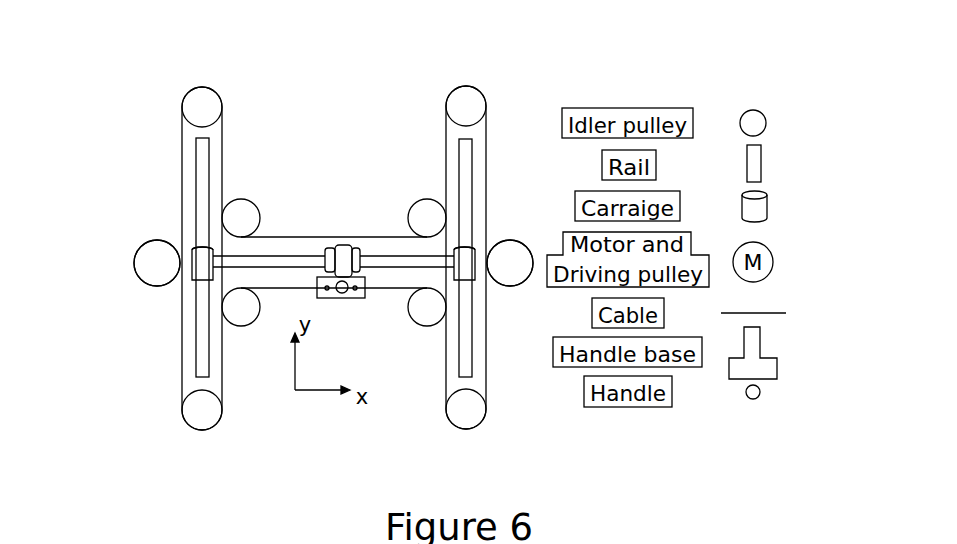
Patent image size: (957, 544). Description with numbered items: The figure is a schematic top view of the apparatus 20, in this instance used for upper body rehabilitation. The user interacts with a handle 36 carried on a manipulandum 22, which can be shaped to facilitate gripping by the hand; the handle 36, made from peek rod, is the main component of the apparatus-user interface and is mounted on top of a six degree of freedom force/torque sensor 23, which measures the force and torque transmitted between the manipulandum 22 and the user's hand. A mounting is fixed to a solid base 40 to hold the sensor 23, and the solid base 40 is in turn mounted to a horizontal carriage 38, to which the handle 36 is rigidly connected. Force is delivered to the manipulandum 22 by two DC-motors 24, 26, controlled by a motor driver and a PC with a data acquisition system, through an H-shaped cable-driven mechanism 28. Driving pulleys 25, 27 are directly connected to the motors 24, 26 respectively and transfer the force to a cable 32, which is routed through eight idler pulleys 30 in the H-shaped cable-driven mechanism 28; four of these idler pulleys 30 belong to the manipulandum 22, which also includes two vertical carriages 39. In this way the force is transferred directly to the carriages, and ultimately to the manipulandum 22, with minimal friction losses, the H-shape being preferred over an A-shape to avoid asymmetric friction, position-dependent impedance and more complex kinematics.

The apparatus 20 is at (115, 293).
The manipulandum 22 is at (333, 299).
The six degree of freedom force/torque sensor 23 is at (343, 245).
The DC-motor 24 is at (157, 263).
The driving pulley 25 is at (165, 241).
The DC-motor 26 is at (510, 263).
The driving pulley 27 is at (510, 240).
The H-shaped cable-driven mechanism 28 is at (466, 140).
The idler pulley 30 is at (202, 86).
The cable 32 is at (486, 386).
The handle 36 is at (342, 294).
The horizontal carriage 38 is at (330, 248).
The vertical carriage 39 is at (200, 281).
The solid base 40 is at (357, 248).